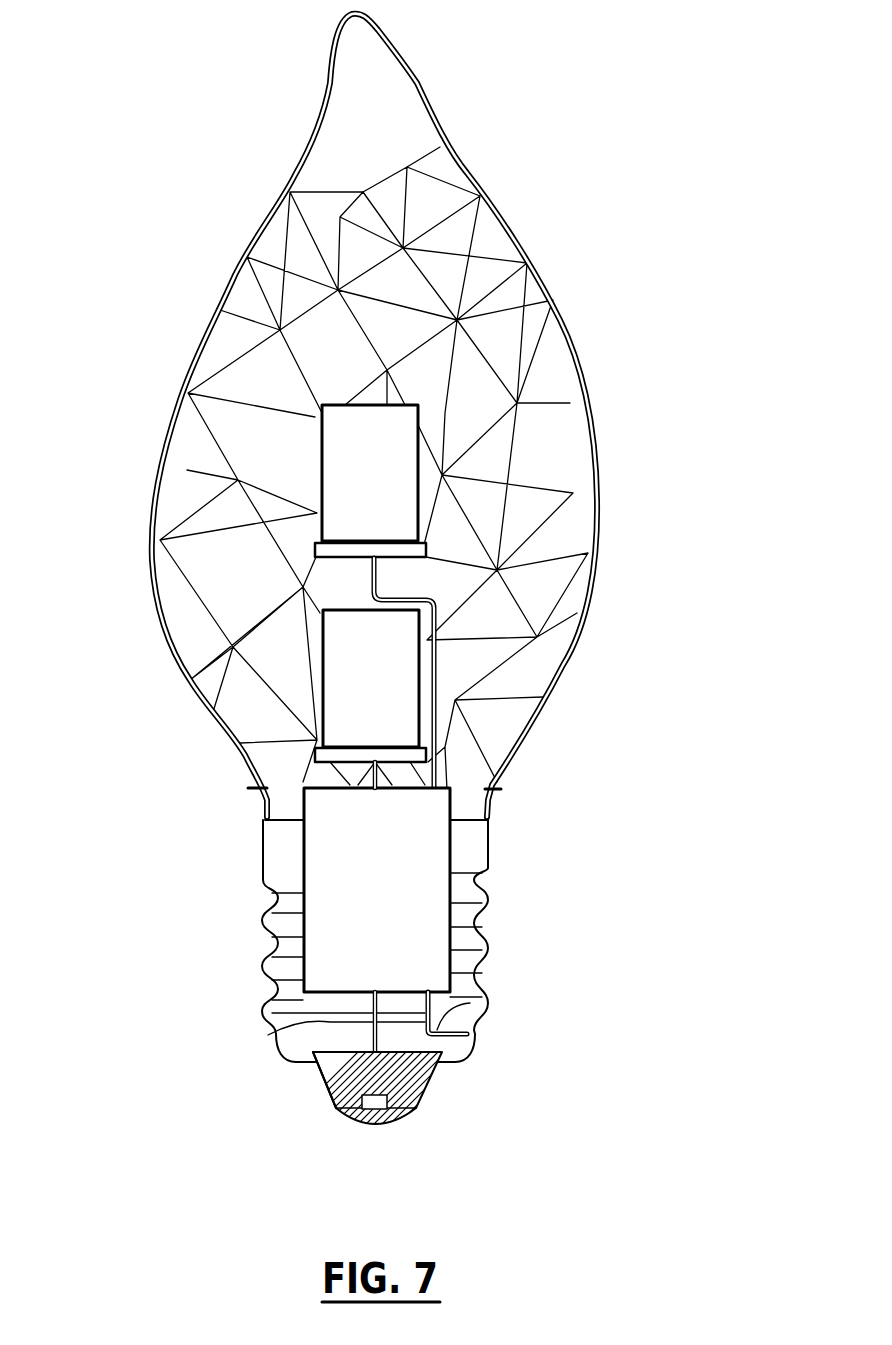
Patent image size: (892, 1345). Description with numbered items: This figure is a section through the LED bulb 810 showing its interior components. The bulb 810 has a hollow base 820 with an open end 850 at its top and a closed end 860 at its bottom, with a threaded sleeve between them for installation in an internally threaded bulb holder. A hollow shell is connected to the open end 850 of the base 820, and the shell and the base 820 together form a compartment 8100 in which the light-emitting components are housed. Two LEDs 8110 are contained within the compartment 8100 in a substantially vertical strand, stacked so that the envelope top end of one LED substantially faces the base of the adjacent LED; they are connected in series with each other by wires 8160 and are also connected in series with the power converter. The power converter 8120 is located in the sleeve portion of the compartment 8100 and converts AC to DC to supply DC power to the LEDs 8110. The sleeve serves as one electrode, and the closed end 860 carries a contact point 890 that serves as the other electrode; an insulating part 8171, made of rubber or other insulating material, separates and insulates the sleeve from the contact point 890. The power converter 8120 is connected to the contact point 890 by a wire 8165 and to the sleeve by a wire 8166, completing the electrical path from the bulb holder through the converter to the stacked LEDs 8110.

The LED bulb 810 is at (571, 92).
The compartment 8100 is at (504, 311).
The LEDs 8110 is at (390, 475).
The wires 8160 is at (440, 654).
The open end 850 is at (496, 790).
The power converter 8120 is at (420, 863).
The hollow base 820 is at (477, 942).
The wire 8166 is at (470, 1003).
The closed end 860 is at (472, 1075).
The wire 8165 is at (312, 1062).
The contact point 890 is at (373, 1127).
The insulating part 8171 is at (325, 1092).